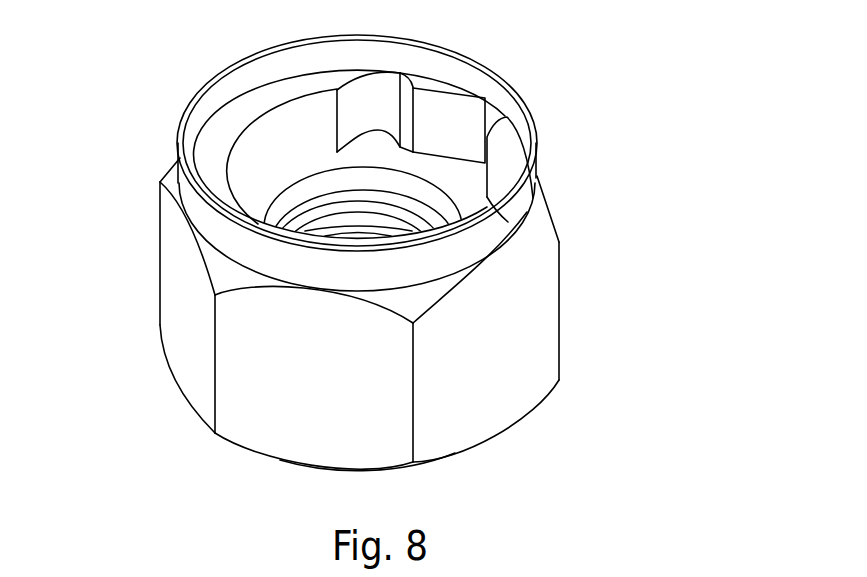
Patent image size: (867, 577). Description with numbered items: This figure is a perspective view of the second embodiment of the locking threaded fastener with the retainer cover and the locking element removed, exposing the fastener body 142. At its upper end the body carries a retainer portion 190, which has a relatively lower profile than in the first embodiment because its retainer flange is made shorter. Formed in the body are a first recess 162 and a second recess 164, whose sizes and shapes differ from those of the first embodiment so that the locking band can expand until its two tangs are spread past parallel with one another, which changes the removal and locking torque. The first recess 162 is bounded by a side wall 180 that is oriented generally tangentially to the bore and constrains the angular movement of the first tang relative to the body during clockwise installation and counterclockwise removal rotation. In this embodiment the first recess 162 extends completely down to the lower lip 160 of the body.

The fastener body 142 is at (565, 323).
The lower lip 160 is at (268, 183).
The first recess 162 is at (388, 80).
The second recess 164 is at (480, 118).
The side wall 180 is at (403, 115).
The retainer portion 190 is at (540, 168).